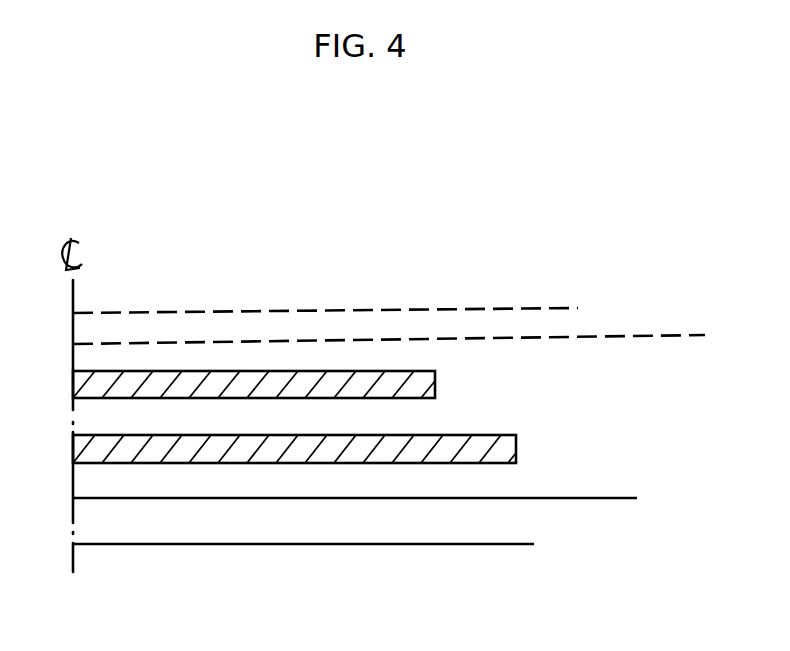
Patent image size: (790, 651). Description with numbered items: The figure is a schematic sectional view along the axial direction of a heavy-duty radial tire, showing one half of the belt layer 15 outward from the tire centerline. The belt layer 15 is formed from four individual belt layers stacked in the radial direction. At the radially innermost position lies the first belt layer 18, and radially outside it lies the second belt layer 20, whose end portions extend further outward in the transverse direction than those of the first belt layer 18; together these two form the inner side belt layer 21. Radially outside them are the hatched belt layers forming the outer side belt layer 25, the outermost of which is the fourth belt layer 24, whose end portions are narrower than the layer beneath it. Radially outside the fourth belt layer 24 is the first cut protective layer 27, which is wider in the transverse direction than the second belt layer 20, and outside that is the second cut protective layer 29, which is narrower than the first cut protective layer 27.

The belt layer 15 is at (497, 227).
The first belt layer 18 is at (267, 546).
The second belt layer 20 is at (398, 498).
The inner side belt layer 21 is at (663, 485).
The fourth belt layer 24 is at (170, 371).
The outer side belt layer 25 is at (550, 368).
The first cut protective layer 27 is at (622, 333).
The second cut protective layer 29 is at (513, 308).